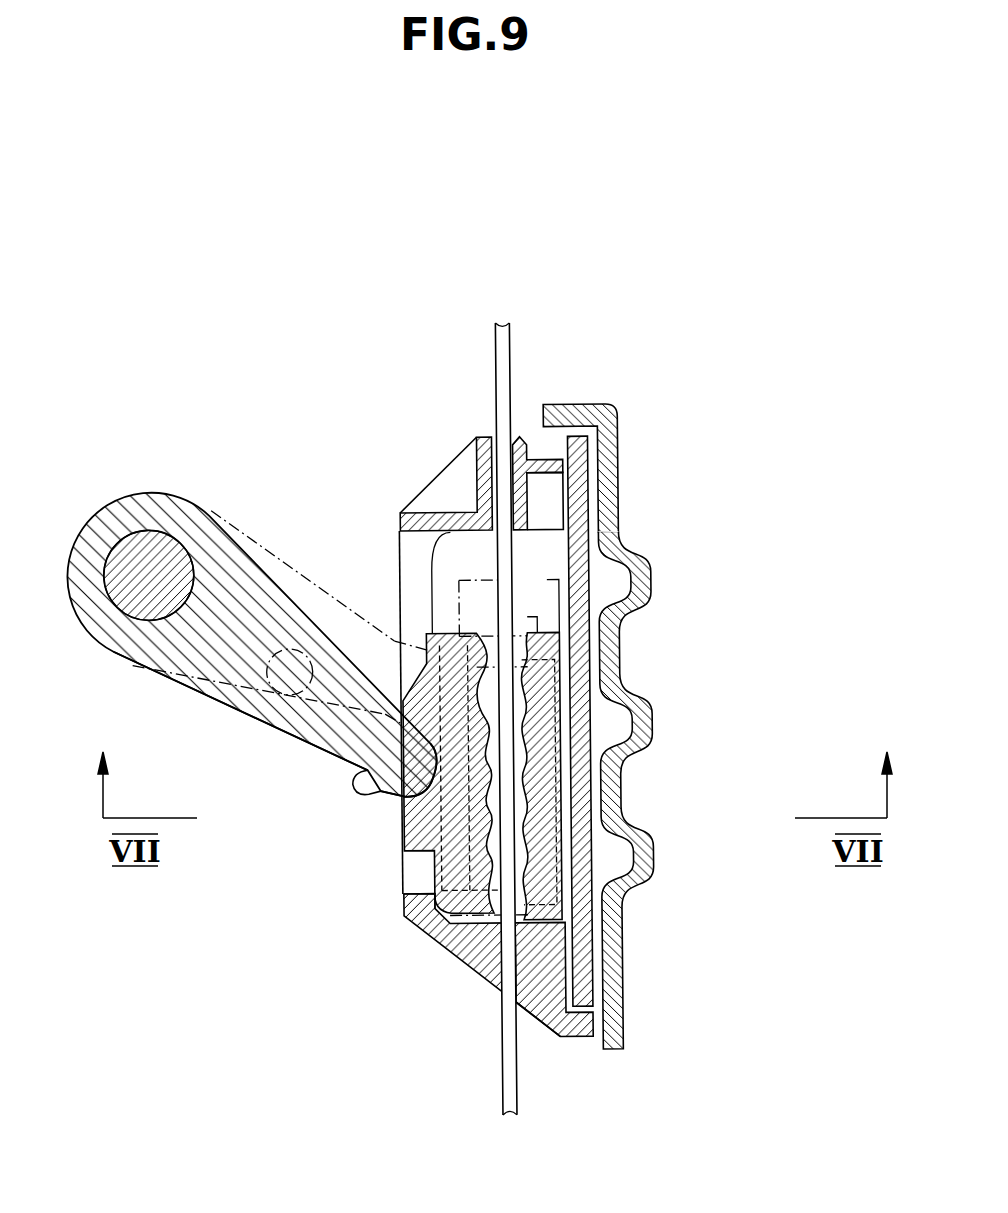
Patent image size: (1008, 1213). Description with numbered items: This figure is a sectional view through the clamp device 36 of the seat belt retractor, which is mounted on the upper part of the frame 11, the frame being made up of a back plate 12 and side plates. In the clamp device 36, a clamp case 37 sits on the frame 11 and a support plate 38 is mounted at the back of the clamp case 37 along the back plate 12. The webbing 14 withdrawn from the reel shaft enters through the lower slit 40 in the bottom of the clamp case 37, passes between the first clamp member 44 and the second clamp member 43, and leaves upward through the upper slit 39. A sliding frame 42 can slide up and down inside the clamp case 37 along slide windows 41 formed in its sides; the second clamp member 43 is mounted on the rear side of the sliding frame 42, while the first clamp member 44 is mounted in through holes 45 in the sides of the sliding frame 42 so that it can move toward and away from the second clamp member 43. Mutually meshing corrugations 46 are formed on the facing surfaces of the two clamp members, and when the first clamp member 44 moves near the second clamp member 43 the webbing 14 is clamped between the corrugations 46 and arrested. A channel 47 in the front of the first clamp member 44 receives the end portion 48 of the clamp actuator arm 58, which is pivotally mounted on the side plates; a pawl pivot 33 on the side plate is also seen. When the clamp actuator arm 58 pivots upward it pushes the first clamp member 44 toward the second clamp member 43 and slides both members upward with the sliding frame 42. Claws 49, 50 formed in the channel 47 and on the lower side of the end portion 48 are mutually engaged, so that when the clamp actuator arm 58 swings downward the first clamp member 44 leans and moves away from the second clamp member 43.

The frame 11 is at (624, 410).
The back plate 12 is at (612, 655).
The webbing 14 is at (503, 347).
The pawl pivot 33 is at (160, 668).
The clamp device 36 is at (434, 407).
The clamp case 37 is at (393, 509).
The support plate 38 is at (580, 502).
The slit 39 is at (500, 455).
The slit 40 is at (515, 960).
The slide window 41 is at (430, 560).
The sliding frame 42 is at (487, 633).
The second clamp member 43 is at (548, 805).
The first clamp member 44 is at (430, 900).
The through hole 45 is at (472, 935).
The corrugations 46 is at (433, 850).
The channel 47 is at (395, 793).
The end portion 48 is at (380, 712).
The claw 49 is at (352, 782).
The claw 50 is at (325, 750).
The clamp actuator arm 58 is at (120, 468).